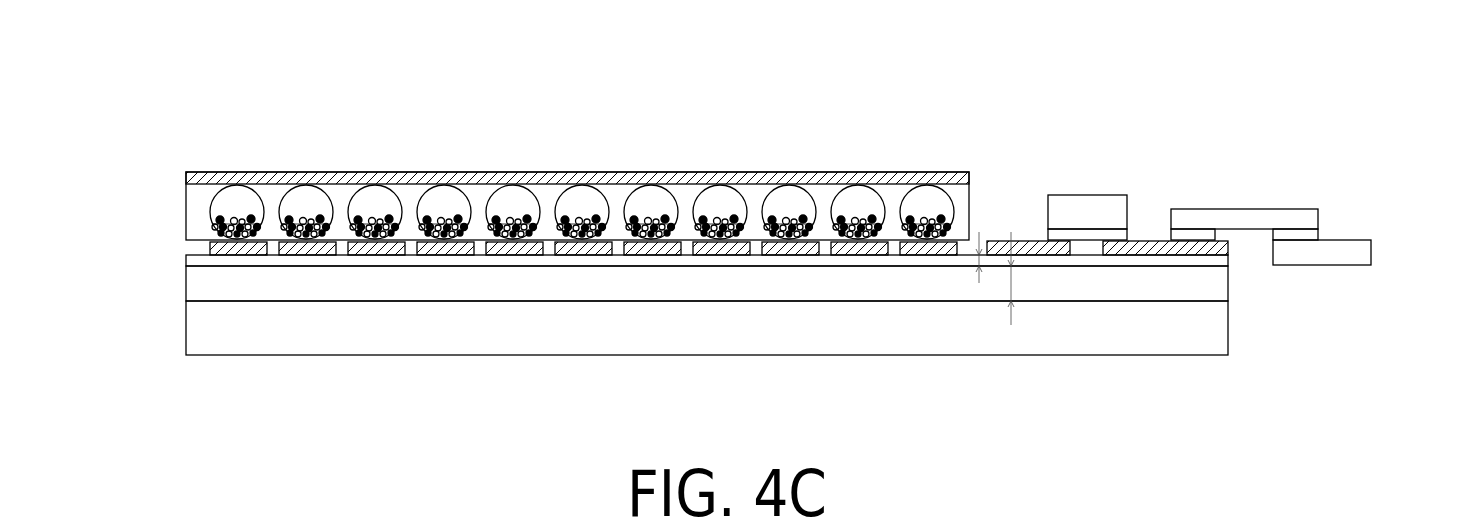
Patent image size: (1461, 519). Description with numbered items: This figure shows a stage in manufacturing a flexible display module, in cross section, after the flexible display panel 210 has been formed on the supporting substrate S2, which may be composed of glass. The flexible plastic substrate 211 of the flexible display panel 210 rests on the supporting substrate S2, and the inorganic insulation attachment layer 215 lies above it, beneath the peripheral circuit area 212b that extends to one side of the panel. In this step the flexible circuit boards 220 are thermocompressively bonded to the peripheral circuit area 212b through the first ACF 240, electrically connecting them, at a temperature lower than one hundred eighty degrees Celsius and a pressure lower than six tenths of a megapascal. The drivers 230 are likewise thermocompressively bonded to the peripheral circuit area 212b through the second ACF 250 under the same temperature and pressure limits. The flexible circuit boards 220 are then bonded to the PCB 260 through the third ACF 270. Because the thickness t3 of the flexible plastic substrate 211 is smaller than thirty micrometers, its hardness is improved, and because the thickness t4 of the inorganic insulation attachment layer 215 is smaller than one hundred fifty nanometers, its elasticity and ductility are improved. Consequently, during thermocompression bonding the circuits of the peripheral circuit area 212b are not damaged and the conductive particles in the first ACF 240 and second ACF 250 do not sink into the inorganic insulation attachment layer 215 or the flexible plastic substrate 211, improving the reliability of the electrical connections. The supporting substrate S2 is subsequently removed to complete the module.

The flexible display panel 210 is at (175, 218).
The inorganic insulation attachment layer 215 is at (192, 258).
The flexible plastic substrate 211 is at (192, 287).
The supporting substrate S2 is at (192, 336).
The peripheral circuit area 212b is at (1025, 220).
The driver 230 is at (1102, 200).
The second ACF 250 is at (1094, 237).
The flexible circuit board 220 is at (1258, 220).
The first ACF 240 is at (1195, 234).
The third ACF 270 is at (1303, 233).
The PCB 260 is at (1367, 252).
The thickness of the inorganic insulation attachment layer t4 is at (979, 258).
The thickness of the flexible plastic substrate t3 is at (1012, 279).